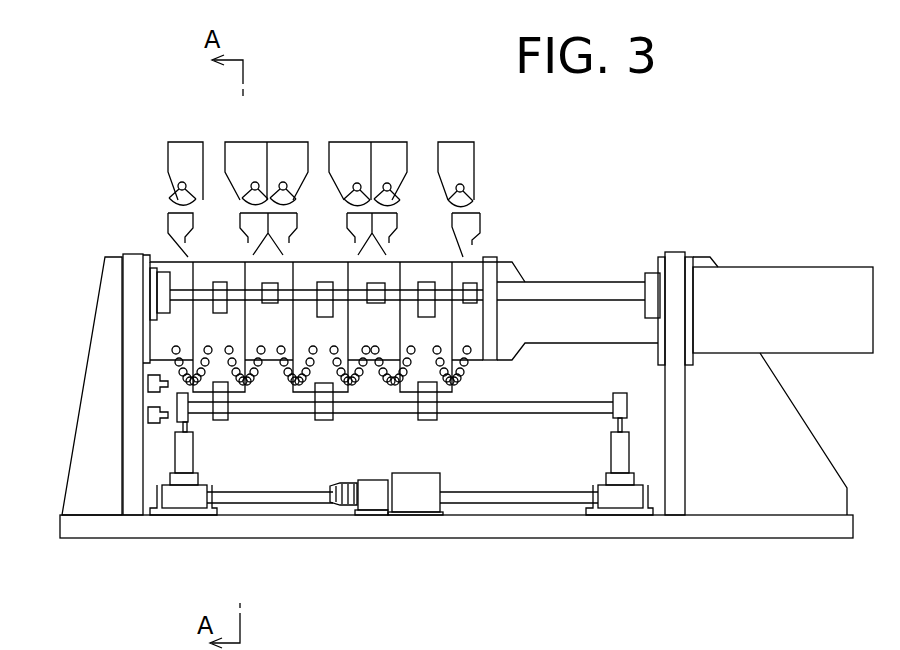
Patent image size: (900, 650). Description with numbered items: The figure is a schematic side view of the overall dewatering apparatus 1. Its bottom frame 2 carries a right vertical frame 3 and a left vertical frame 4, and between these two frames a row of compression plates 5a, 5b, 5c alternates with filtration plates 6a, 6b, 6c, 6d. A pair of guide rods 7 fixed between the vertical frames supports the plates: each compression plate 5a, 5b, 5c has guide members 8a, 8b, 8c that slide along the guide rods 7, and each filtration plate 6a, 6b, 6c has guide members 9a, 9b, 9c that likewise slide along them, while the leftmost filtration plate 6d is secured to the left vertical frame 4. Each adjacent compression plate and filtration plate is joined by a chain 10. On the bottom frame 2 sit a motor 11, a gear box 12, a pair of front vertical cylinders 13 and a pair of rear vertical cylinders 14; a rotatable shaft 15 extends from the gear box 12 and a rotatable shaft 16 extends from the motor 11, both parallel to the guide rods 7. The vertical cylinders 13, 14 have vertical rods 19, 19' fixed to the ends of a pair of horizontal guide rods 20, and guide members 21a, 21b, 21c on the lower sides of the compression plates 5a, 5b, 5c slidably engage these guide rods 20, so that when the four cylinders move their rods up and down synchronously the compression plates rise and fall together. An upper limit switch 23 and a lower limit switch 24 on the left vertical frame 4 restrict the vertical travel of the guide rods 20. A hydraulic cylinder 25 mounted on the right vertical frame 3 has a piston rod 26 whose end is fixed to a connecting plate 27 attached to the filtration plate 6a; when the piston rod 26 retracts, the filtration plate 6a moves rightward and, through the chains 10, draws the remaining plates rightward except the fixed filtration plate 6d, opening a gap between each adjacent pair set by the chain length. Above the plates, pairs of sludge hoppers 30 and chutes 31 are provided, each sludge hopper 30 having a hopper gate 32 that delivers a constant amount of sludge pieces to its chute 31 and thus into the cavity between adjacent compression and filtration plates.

The dewatering apparatus 1 is at (735, 166).
The bottom frame 2 is at (663, 523).
The right vertical frame 3 is at (685, 435).
The left vertical frame 4 is at (120, 281).
The compression plate 5a is at (412, 257).
The compression plate 5b is at (307, 257).
The compression plate 5c is at (203, 257).
The filtration plate 6a is at (472, 363).
The filtration plate 6b is at (375, 342).
The filtration plate 6c is at (272, 368).
The leftmost filtration plate 6d is at (163, 257).
The guide rod 7 is at (568, 282).
The guide member 8a is at (434, 282).
The guide member 8b is at (327, 282).
The guide member 8c is at (222, 282).
The guide member 9a is at (472, 282).
The guide member 9b is at (376, 304).
The guide member 9c is at (268, 304).
The chain 10 is at (468, 375).
The motor 11 is at (370, 495).
The gear box 12 is at (418, 497).
The front vertical cylinder 13 is at (618, 470).
The rear vertical cylinder 14 is at (183, 495).
The rotatable shaft 15 is at (487, 497).
The rotatable shaft 16 is at (253, 500).
The vertical rod 19 is at (663, 412).
The vertical rod 19' is at (106, 431).
The horizontal guide rod 20 is at (543, 415).
The guide member 21a is at (433, 420).
The guide member 21b is at (325, 420).
The guide member 21c is at (223, 420).
The upper limit switch 23 is at (147, 370).
The lower limit switch 24 is at (147, 401).
The hydraulic cylinder 25 is at (795, 282).
The piston rod 26 is at (598, 281).
The connecting plate 27 is at (498, 258).
The sludge hopper 30 is at (168, 163).
The chute 31 is at (168, 215).
The hopper gate 32 is at (202, 197).